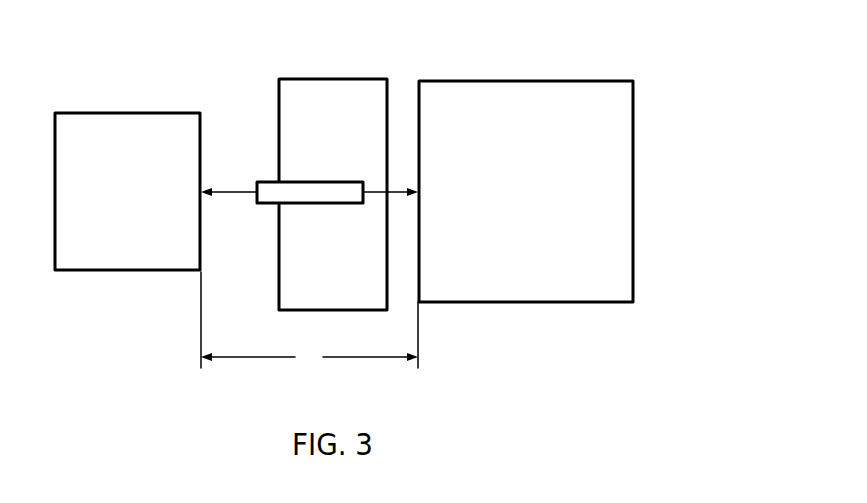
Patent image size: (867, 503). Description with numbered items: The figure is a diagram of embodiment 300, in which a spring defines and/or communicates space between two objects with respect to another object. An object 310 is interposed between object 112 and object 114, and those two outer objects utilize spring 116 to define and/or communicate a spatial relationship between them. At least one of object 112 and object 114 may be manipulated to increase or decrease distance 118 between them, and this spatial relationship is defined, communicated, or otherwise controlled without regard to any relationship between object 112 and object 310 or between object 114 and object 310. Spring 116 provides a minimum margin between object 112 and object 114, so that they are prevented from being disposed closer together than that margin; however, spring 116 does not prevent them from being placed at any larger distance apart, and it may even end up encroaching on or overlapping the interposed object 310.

The embodiment 300 is at (671, 76).
The object 112 is at (163, 113).
The object 310 is at (360, 79).
The object 114 is at (580, 81).
The spring 116 is at (336, 182).
The distance 118 is at (418, 347).